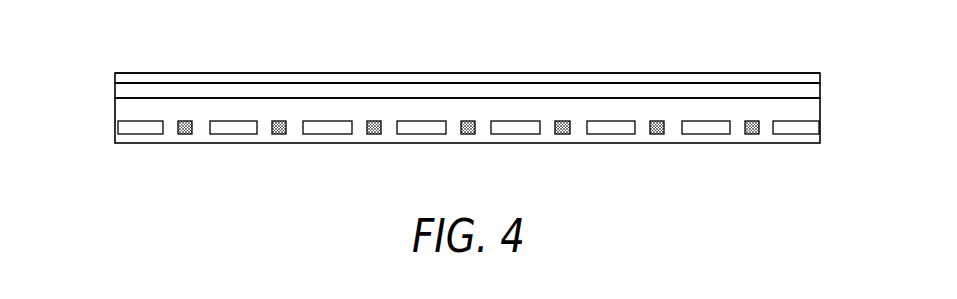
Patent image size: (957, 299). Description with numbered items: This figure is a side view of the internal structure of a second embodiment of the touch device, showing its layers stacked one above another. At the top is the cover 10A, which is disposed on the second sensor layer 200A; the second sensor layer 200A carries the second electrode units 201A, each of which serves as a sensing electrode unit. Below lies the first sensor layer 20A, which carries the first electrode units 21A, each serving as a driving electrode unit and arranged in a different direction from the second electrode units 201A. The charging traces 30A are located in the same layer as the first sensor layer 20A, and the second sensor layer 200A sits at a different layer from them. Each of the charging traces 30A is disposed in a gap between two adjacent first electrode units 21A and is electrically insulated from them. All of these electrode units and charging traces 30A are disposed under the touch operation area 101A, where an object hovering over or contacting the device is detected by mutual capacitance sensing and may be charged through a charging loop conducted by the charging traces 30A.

The cover 10A is at (115, 75).
The touch operation area 101A is at (155, 72).
The second sensor layer 200A is at (836, 90).
The second electrode units 201A is at (763, 90).
The first sensor layer 20A is at (836, 128).
The first electrode units 21A is at (122, 123).
The charging traces 30A is at (182, 134).